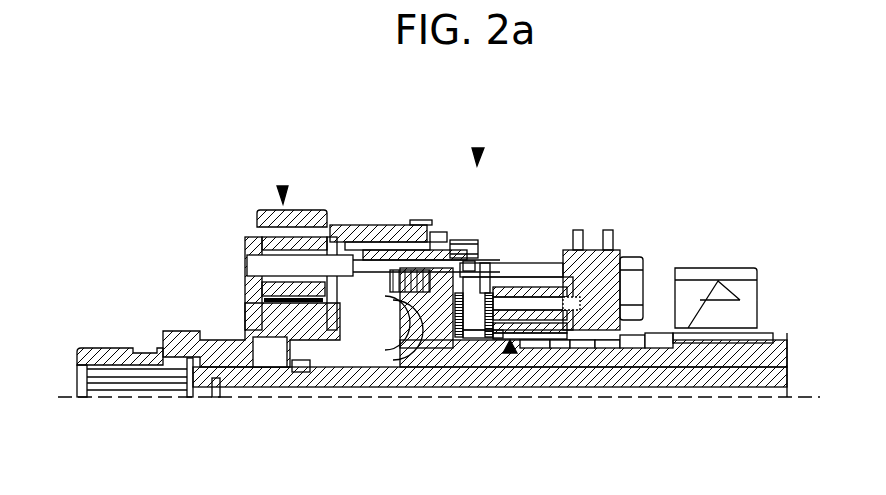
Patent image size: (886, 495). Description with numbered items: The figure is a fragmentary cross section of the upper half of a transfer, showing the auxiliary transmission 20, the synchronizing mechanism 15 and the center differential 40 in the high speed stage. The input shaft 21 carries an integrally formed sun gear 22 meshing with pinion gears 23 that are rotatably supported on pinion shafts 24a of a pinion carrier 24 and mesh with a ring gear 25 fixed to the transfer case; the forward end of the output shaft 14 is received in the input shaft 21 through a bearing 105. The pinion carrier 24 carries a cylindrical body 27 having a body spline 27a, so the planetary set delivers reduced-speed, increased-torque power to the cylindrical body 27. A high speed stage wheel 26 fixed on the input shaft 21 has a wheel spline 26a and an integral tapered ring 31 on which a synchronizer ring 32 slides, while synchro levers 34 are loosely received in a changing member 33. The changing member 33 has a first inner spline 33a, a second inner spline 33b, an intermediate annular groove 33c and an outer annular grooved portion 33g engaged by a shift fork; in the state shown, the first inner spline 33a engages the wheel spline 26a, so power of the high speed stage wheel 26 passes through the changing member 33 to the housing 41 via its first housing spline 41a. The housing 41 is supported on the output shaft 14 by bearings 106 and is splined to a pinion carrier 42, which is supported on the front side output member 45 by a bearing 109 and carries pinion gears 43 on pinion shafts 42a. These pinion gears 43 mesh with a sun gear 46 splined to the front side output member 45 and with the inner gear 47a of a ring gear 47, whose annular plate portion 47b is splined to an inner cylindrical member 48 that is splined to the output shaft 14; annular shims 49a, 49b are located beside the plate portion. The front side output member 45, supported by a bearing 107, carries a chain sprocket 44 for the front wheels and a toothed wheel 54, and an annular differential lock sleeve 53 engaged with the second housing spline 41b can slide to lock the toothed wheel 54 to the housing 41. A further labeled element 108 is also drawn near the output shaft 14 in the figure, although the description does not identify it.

The output shaft 14 is at (787, 393).
The synchronizing mechanism 15 is at (478, 148).
The auxiliary transmission 20 is at (282, 186).
The input shaft 21 is at (77, 350).
The sun gear 22 is at (282, 318).
The pinion gears 23 is at (258, 243).
The pinion carrier 24 is at (256, 290).
The pinion shafts 24a is at (252, 266).
The ring gear 25 is at (257, 216).
The high speed stage wheel 26 is at (345, 368).
The wheel spline 26a is at (330, 238).
The cylindrical body 27 is at (420, 221).
The body spline 27a is at (440, 233).
The tapered ring 31 is at (390, 370).
The synchronizer ring 32 is at (385, 252).
The changing member 33 is at (395, 226).
The first inner spline 33a is at (362, 244).
The second inner spline 33b is at (458, 242).
The annular groove 33c is at (400, 270).
The annular grooved portion 33g is at (470, 261).
The synchro levers 34 is at (408, 370).
The center differential 40 is at (503, 356).
The housing 41 is at (566, 240).
The first housing spline 41a is at (490, 270).
The second housing spline 41b is at (565, 245).
The pinion carrier 42 is at (660, 360).
The pinion shafts 42a is at (535, 370).
The pinion gears 43 is at (700, 367).
The chain sprocket 44 is at (757, 272).
The front side output member 45 is at (600, 372).
The sun gear 46 is at (580, 370).
The ring gear 47 is at (507, 283).
The inner gear 47a is at (510, 295).
The annular plate portion 47b is at (490, 340).
The inner cylindrical member 48 is at (460, 340).
The annular shim 49a is at (455, 375).
The annular shim 49b is at (515, 265).
The annular differential lock sleeve 53 is at (613, 232).
The toothed wheel 54 is at (643, 262).
The bearing 105 is at (218, 385).
The bearings 106 is at (303, 368).
The bearing 107 is at (560, 370).
The shaft 108 is at (760, 378).
The bearing 109 is at (630, 368).